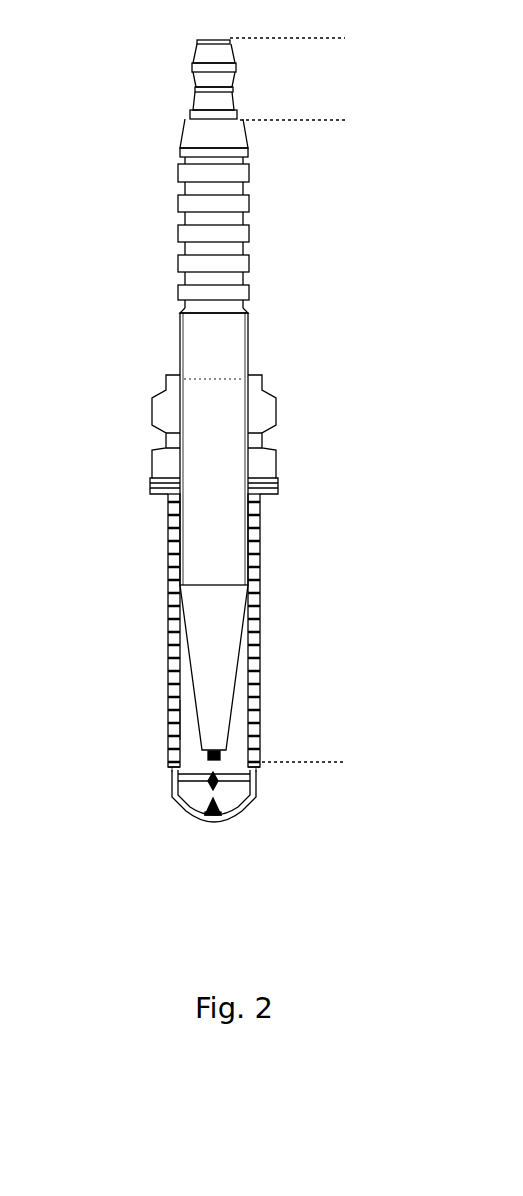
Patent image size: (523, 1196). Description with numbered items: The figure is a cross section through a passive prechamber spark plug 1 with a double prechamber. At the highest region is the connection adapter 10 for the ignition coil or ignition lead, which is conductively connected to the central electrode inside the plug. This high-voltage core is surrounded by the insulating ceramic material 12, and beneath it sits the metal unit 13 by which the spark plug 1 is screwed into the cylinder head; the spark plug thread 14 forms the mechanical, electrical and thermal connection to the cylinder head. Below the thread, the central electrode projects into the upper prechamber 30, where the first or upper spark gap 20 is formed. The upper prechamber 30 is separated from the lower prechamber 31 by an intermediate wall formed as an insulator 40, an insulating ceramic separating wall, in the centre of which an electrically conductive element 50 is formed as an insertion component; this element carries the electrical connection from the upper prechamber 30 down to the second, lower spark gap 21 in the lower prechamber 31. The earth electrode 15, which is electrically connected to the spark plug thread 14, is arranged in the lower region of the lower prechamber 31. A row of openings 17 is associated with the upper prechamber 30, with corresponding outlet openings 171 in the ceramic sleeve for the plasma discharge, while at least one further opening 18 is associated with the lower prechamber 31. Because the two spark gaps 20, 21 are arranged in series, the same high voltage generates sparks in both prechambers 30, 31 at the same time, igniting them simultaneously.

The spark plug 1 is at (245, 482).
The connection adapter 10 is at (290, 86).
The insulating ceramic material 12 is at (258, 345).
The metal unit 13 is at (319, 445).
The spark plug thread 14 is at (265, 648).
The upper spark gap 20 is at (230, 770).
The upper prechamber 30 is at (187, 733).
The electrically conductive element 50 is at (211, 773).
The lower spark gap 21 is at (211, 793).
The lower row of openings 18 is at (185, 818).
The earth electrode 15 is at (206, 806).
The upper row of openings 17 is at (263, 768).
The outlet openings of insulating ceramic sleeve 171 is at (316, 794).
The insulator 40 is at (240, 786).
The lower prechamber 31 is at (233, 801).